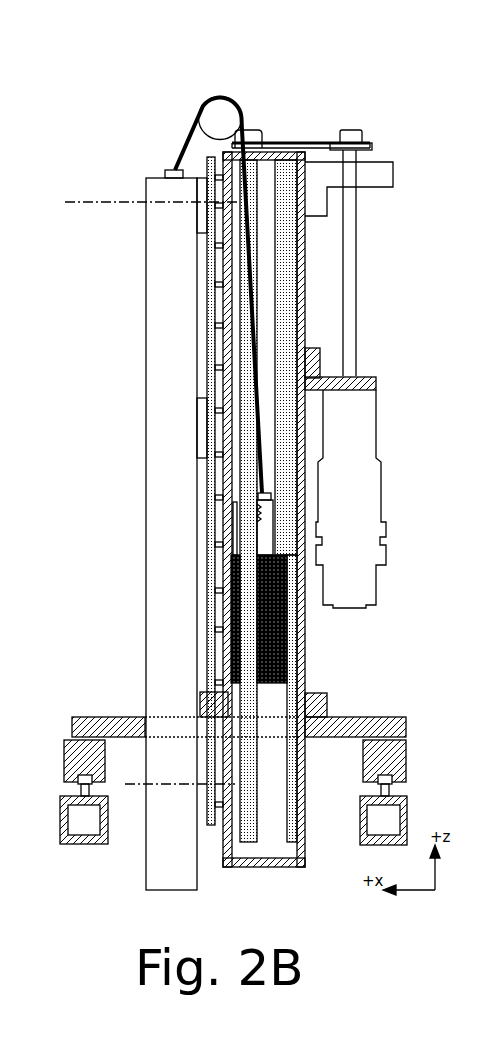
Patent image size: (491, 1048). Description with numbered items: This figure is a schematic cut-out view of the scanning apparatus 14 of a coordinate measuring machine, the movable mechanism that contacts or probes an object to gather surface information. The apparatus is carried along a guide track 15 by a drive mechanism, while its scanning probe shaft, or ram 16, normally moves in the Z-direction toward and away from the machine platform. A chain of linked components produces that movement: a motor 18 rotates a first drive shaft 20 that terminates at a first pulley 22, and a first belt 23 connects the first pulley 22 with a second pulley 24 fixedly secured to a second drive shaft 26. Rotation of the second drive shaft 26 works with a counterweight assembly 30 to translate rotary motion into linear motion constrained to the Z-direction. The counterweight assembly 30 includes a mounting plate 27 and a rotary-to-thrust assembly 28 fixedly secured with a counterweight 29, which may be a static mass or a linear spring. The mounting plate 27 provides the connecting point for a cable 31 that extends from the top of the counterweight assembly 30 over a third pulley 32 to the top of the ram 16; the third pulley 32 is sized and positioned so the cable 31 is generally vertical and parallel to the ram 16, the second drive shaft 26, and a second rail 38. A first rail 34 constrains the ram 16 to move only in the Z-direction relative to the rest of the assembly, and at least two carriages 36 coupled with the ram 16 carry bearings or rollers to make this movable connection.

The scanning apparatus 14 is at (323, 80).
The guide track 15 is at (82, 783).
The scanning probe shaft 16 is at (146, 305).
The motor 18 is at (377, 418).
The first drive shaft 20 is at (356, 272).
The first pulley 22 is at (362, 130).
The first belt 23 is at (303, 142).
The second pulley 24 is at (253, 130).
The second drive shaft 26 is at (248, 470).
The mounting plate 27 is at (272, 498).
The rotary-to-thrust assembly 28 is at (270, 531).
The counterweight 29 is at (283, 634).
The counterweight assembly 30 is at (275, 563).
The cable 31 is at (186, 124).
The third pulley 32 is at (220, 110).
The first rail 34 is at (207, 640).
The carriages 36 is at (205, 240).
The second rail 38 is at (288, 708).